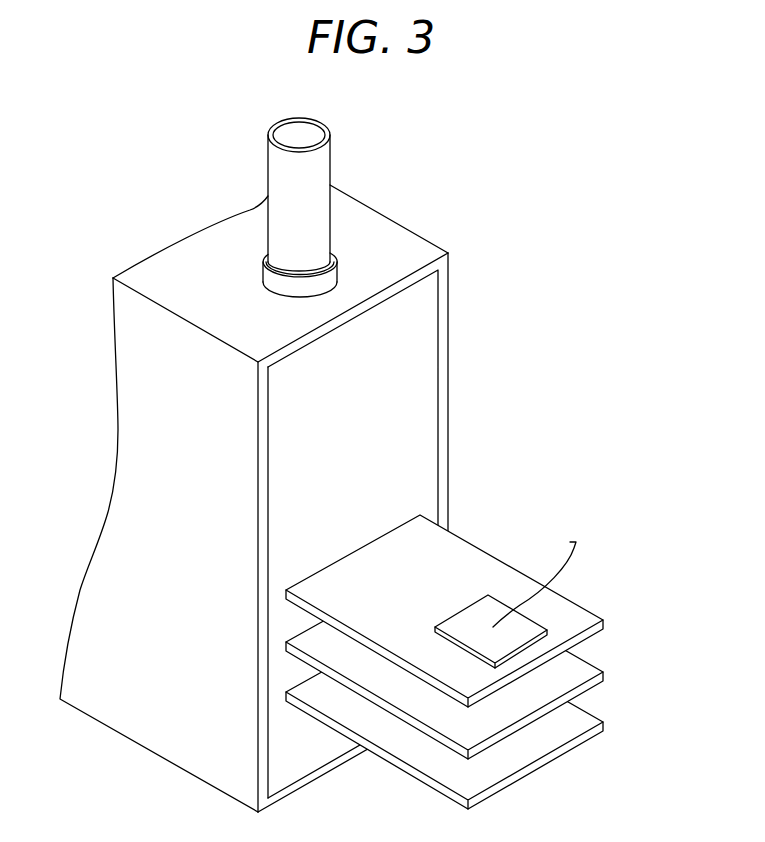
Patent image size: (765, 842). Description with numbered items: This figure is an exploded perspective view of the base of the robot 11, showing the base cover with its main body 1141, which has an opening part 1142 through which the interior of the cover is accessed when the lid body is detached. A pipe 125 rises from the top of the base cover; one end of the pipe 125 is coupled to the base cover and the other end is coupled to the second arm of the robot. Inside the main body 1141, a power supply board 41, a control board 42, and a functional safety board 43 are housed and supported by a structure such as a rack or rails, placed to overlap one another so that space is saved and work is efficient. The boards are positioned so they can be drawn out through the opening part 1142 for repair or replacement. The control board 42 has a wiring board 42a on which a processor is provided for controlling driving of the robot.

The processing apparatus 11 is at (368, 456).
The pipe 125 is at (313, 169).
The opening part 1142 is at (450, 277).
The main body 1141 is at (163, 662).
The power supply board 41 is at (607, 721).
The control board 42 is at (607, 619).
The wiring board 42a is at (463, 570).
The functional safety board 43 is at (607, 671).